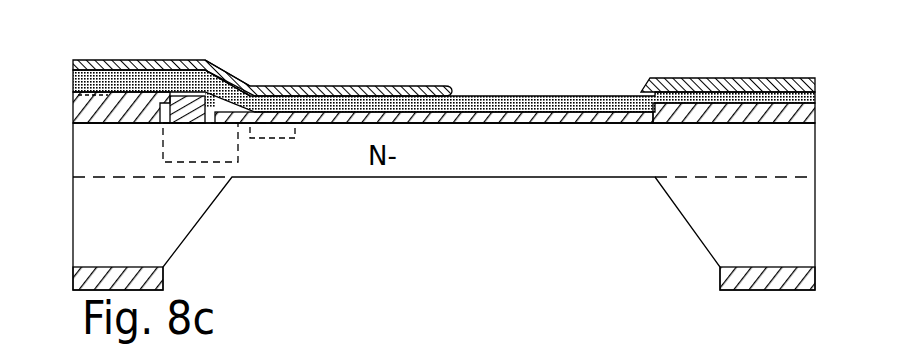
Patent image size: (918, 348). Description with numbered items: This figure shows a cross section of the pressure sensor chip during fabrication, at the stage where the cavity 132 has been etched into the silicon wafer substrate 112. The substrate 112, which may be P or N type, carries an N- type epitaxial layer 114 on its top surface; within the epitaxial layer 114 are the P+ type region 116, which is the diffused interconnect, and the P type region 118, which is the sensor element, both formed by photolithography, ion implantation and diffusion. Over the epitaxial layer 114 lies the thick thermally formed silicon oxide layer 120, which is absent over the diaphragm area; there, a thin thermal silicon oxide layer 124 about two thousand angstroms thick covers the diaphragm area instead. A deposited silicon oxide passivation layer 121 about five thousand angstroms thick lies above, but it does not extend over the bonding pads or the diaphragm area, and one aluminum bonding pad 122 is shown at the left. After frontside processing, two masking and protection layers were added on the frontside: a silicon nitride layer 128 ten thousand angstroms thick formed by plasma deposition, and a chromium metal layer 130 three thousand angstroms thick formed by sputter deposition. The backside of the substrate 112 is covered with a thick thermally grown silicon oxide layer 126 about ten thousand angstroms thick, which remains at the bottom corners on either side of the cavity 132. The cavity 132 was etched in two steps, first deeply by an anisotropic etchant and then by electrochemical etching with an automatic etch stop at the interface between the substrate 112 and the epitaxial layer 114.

The silicon wafer substrate 112 is at (97, 198).
The N- type epitaxial layer 114 is at (97, 153).
The P+ type region 116 is at (178, 150).
The P type region 118 is at (250, 135).
The thick layer of silicon oxide 120 is at (815, 105).
The silicon oxide passivation layer 121 is at (213, 62).
The bonding pad 122 is at (73, 95).
The thin layer of silicon oxide 124 is at (338, 87).
The backside silicon oxide layer 126 is at (790, 275).
The silicon nitride layer 128 is at (795, 78).
The chromium metal layer 130 is at (685, 78).
The cavity 132 is at (456, 202).